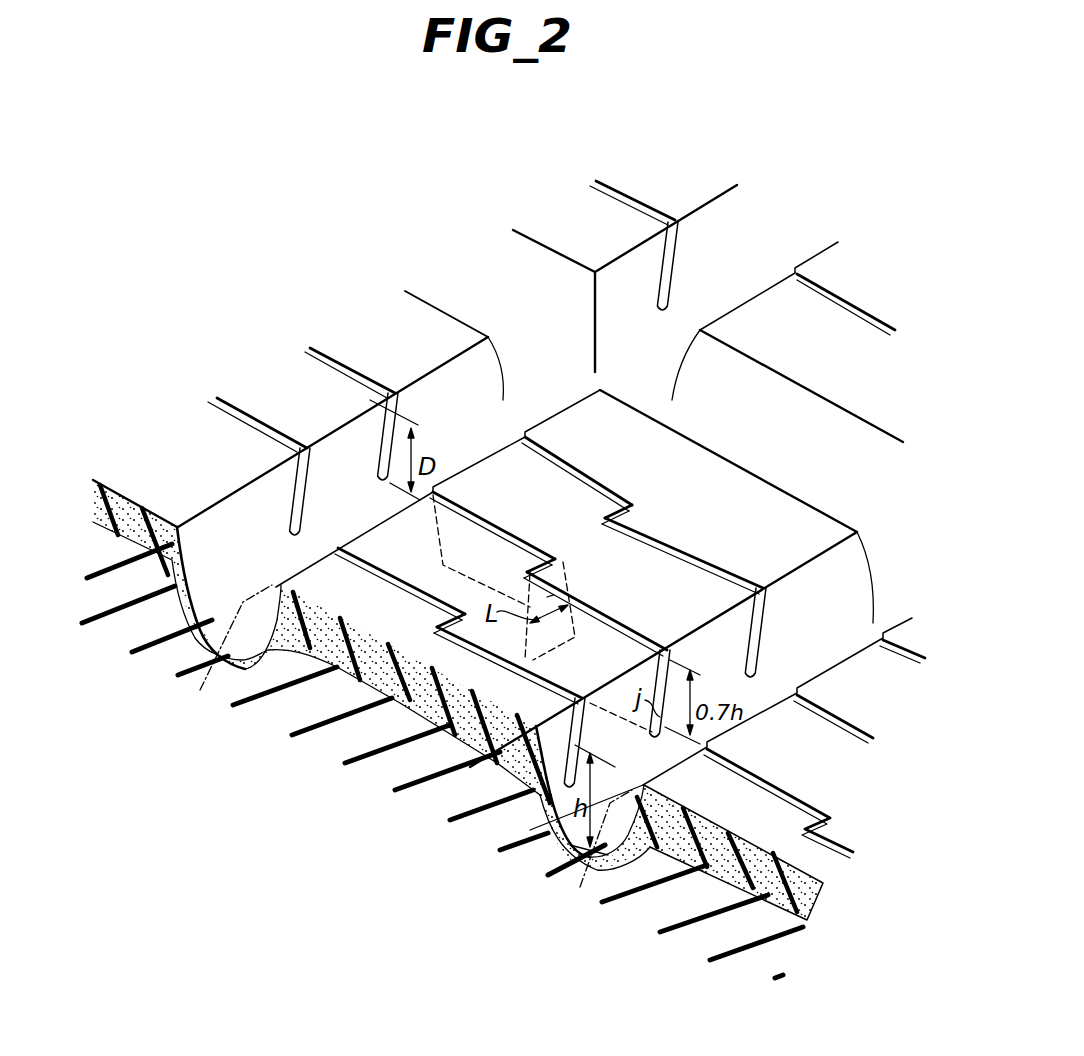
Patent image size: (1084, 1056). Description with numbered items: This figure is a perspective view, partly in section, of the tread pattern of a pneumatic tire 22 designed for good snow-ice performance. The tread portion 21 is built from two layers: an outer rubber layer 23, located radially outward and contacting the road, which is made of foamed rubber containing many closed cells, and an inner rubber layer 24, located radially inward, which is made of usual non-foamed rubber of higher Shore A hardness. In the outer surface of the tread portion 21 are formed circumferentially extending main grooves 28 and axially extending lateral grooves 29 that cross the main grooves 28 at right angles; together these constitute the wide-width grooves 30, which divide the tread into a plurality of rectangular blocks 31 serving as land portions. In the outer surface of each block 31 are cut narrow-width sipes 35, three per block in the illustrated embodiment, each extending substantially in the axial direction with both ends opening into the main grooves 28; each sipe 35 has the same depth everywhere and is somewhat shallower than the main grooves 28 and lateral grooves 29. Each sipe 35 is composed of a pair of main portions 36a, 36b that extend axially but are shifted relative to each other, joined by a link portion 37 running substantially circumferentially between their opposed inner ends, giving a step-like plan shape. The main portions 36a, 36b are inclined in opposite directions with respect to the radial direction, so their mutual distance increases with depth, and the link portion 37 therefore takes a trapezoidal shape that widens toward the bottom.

The tread portion 21 is at (543, 215).
The pneumatic tire 22 is at (700, 180).
The outer rubber layer 23 is at (335, 643).
The inner rubber layer 24 is at (380, 732).
The main grooves 28 is at (247, 520).
The lateral grooves 29 is at (822, 415).
The wide-width grooves 30 is at (865, 472).
The blocks 31 is at (442, 330).
The sipes 35 is at (257, 423).
The main portion 36a is at (570, 462).
The main portion 36b is at (718, 567).
The link portion 37 is at (665, 514).